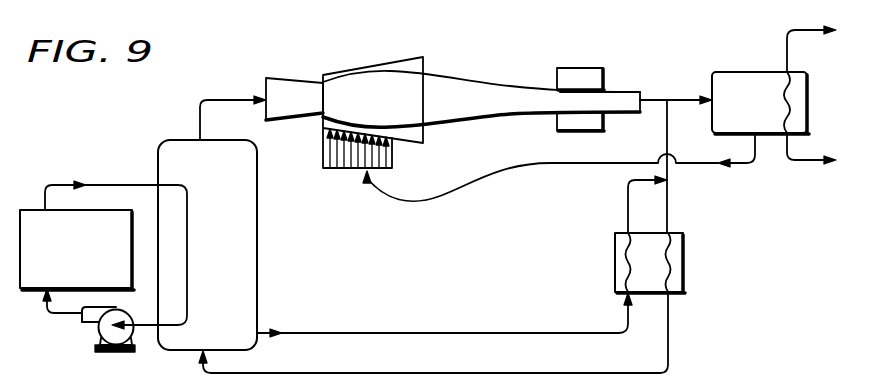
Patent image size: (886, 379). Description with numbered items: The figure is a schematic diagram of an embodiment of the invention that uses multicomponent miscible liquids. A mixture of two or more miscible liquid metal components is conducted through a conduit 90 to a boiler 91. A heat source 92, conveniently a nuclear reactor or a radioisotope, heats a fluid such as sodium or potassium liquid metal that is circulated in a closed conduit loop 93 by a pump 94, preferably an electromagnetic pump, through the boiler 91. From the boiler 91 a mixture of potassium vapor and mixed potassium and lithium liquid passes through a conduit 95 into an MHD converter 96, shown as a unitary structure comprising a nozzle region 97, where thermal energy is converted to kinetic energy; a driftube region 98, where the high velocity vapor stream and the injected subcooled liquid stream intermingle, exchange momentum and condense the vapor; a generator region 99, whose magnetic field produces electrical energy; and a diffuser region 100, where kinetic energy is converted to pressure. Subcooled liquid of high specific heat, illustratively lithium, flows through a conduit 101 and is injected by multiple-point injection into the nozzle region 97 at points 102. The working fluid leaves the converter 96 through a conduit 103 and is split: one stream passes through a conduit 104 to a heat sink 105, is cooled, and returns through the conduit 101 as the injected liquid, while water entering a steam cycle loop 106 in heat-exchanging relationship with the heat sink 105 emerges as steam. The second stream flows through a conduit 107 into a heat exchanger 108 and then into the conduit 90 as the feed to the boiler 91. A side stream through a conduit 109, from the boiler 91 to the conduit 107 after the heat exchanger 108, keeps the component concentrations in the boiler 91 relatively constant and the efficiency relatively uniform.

The conduit 90 is at (308, 373).
The boiler 91 is at (257, 287).
The heat source 92 is at (37, 210).
The closed conduit loop 93 is at (143, 185).
The pump 94 is at (105, 330).
The conduit 95 is at (210, 100).
The MHD converter 96 is at (340, 62).
The nozzle region 97 is at (289, 86).
The driftube region 98 is at (432, 82).
The generator region 99 is at (583, 99).
The diffuser region 100 is at (623, 92).
The conduit 101 is at (558, 165).
The injection points 102 is at (362, 171).
The conduit 103 is at (652, 100).
The conduit 104 is at (668, 110).
The heat sink 105 is at (772, 72).
The steam cycle loop 106 is at (801, 160).
The conduit 107 is at (669, 213).
The heat exchanger 108 is at (684, 276).
The conduit 109 is at (368, 333).